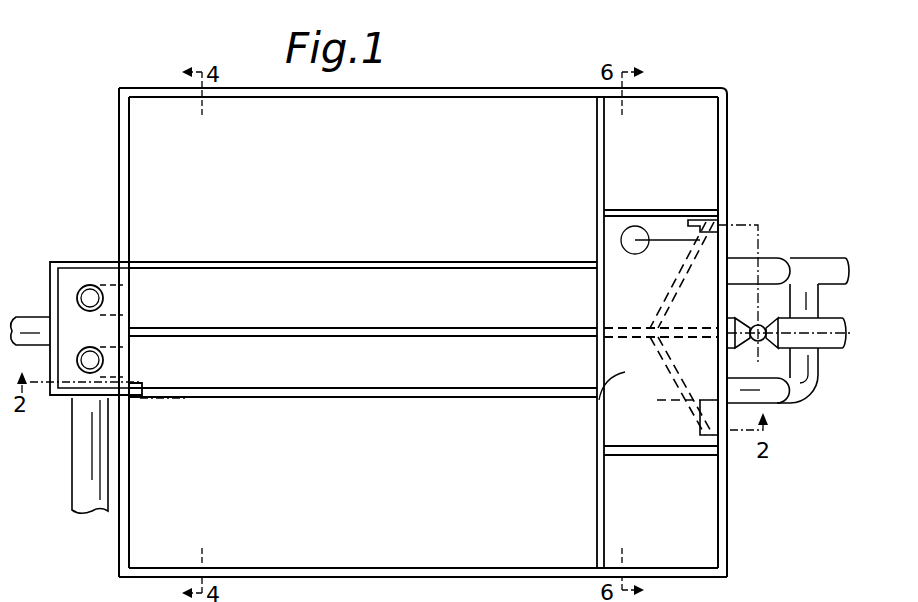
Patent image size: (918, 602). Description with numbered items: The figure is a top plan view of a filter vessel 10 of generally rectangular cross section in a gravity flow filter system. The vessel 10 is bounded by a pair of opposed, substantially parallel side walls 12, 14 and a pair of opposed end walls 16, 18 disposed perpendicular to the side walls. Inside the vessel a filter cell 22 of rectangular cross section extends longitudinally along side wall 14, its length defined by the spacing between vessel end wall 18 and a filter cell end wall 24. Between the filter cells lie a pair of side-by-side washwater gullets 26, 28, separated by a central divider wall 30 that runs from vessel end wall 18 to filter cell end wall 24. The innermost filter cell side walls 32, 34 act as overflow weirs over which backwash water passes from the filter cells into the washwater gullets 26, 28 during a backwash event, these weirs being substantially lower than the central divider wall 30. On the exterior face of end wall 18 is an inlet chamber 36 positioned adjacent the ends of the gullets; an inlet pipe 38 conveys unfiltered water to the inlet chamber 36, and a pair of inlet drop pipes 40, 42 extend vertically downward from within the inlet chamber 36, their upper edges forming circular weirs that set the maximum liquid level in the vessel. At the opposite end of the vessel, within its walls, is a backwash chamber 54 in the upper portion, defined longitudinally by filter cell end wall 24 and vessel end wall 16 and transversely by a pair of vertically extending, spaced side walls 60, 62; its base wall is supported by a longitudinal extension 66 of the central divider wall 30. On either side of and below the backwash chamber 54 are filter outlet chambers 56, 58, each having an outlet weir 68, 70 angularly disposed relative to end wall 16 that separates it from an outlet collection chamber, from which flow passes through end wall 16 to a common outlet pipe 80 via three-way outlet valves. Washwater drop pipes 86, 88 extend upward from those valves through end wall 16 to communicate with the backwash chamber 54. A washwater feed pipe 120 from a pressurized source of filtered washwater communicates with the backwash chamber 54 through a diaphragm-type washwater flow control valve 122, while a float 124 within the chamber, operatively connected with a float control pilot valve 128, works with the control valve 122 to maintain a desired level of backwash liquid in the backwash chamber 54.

The filter vessel 10 is at (462, 70).
The side wall 12 is at (506, 90).
The side wall 14 is at (480, 578).
The end wall 16 is at (728, 140).
The end wall 18 is at (119, 152).
The filter cell 22 is at (272, 566).
The filter cell end wall 24 is at (597, 150).
The washwater gullet 26 is at (398, 262).
The washwater gullet 28 is at (440, 337).
The central divider wall 30 is at (322, 330).
The filter cell side wall 32 is at (292, 262).
The filter cell side wall 34 is at (393, 398).
The inlet chamber 36 is at (50, 268).
The inlet pipe 38 is at (32, 317).
The inlet drop pipe 40 is at (90, 285).
The inlet drop pipe 42 is at (88, 365).
The backwash chamber 54 is at (598, 398).
The filter outlet chamber 56 is at (715, 118).
The filter outlet chamber 58 is at (712, 549).
The side wall 60 is at (648, 210).
The side wall 62 is at (690, 455).
The longitudinal extension 66 is at (632, 328).
The outlet weir 68 is at (678, 406).
The outlet weir 70 is at (670, 312).
The outlet pipe 80 is at (828, 258).
The washwater drop pipe 86 is at (745, 268).
The washwater drop pipe 88 is at (778, 407).
The washwater feed pipe 120 is at (816, 398).
The washwater flow control valve 122 is at (788, 348).
The float 124 is at (636, 254).
The float control pilot valve 128 is at (712, 218).